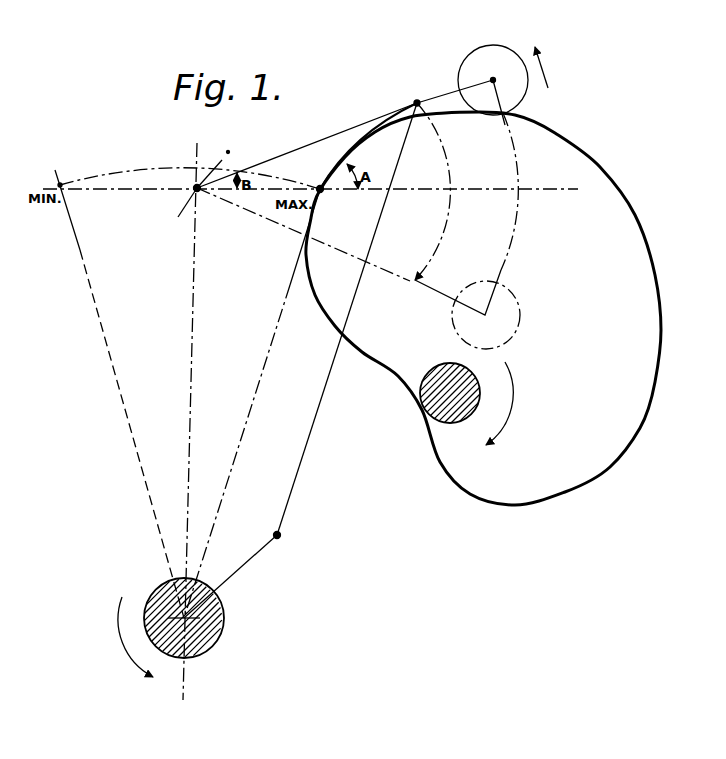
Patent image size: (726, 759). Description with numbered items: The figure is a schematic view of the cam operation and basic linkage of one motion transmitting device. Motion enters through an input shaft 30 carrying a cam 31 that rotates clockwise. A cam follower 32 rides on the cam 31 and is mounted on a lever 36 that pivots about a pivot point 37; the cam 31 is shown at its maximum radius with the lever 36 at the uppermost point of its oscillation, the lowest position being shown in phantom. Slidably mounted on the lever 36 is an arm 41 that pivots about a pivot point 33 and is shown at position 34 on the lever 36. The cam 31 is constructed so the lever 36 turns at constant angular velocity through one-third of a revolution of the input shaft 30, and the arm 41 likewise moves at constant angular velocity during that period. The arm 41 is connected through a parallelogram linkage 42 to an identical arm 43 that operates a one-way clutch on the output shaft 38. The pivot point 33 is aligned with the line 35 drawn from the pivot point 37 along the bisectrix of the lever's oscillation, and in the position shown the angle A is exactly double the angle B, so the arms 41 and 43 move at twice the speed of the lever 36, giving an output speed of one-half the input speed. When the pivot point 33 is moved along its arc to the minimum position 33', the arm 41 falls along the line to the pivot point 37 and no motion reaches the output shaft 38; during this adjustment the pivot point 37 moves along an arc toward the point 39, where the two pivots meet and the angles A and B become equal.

The input shaft 30 is at (457, 424).
The cam 31 is at (483, 308).
The cam follower 32 is at (495, 55).
The pivot point 33 is at (311, 175).
The minimum position 33' is at (44, 170).
The position 34 is at (415, 101).
The bisectrix line 35 is at (549, 198).
The lever 36 is at (298, 151).
The pivot point 37 is at (181, 216).
The output shaft 38 is at (160, 592).
The meeting point 39 is at (211, 168).
The arm 41 is at (362, 150).
The parallelogram linkage 42 is at (302, 458).
The arm 43 is at (243, 566).